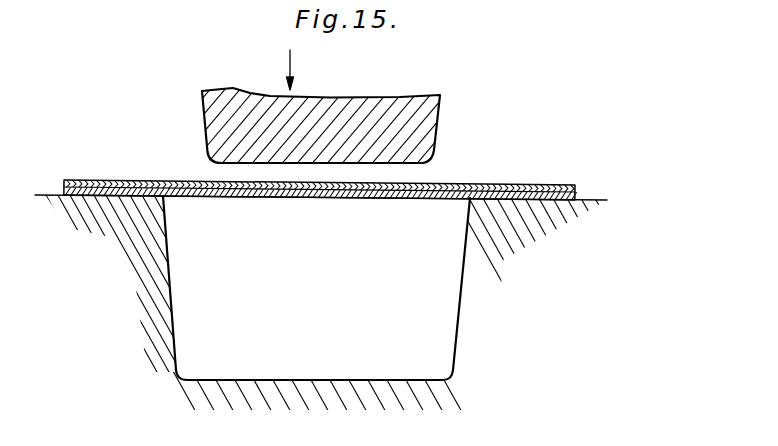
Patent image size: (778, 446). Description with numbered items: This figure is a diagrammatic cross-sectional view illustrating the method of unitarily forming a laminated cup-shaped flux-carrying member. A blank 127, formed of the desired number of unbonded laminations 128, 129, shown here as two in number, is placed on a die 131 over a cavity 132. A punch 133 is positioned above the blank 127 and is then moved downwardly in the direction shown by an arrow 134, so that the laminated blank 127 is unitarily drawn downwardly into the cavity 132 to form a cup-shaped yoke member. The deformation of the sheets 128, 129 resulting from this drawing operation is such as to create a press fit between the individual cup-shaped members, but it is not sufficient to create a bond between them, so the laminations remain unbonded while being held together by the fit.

The blank 127 is at (510, 165).
The lamination 128 is at (575, 190).
The lamination 129 is at (575, 197).
The die 131 is at (492, 230).
The cavity 132 is at (322, 275).
The punch 133 is at (420, 117).
The arrow 134 is at (290, 60).